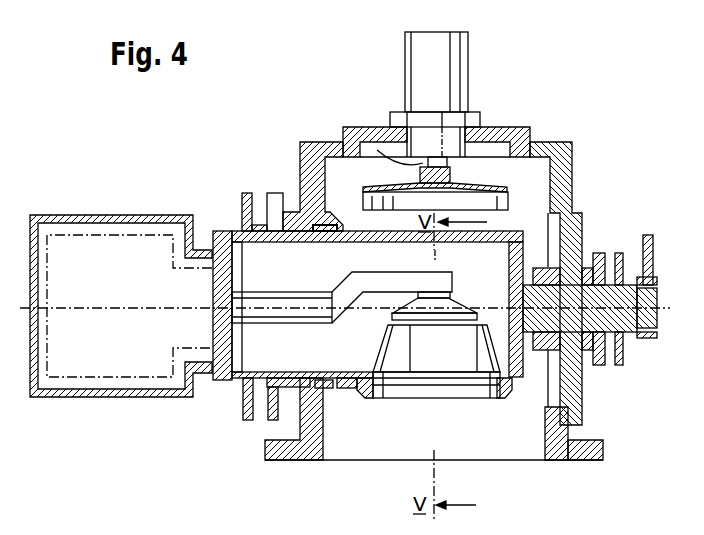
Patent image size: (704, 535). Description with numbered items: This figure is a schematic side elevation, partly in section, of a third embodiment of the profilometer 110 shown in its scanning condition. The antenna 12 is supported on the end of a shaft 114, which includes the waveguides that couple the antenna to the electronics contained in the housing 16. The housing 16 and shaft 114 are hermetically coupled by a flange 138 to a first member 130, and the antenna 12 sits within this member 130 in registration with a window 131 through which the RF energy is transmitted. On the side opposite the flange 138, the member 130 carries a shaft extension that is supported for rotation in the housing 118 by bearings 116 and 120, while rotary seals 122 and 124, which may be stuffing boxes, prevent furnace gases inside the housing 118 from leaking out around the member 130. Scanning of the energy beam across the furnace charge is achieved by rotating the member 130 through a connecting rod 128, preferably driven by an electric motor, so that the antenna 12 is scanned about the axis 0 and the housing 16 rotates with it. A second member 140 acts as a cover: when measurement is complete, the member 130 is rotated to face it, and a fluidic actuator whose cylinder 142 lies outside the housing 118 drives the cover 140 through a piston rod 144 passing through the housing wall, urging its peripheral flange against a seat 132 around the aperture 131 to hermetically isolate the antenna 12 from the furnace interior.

The axis O 0 is at (143, 309).
The antenna 12 is at (389, 318).
The housing 16 is at (118, 215).
The profilometer 110 is at (153, 410).
The shaft 114 is at (260, 302).
The bearing 116 is at (317, 226).
The housing 118 is at (547, 147).
The bearing 120 is at (553, 281).
The rotary seal 122 is at (247, 193).
The rotary seal 124 is at (618, 362).
The connecting rod 128 is at (650, 234).
The first member 130 is at (262, 230).
The window 131 is at (420, 388).
The seat 132 is at (508, 398).
The flange 138 is at (218, 381).
The second member 140 is at (483, 183).
The cylinder 142 is at (457, 53).
The piston rod 144 is at (432, 167).